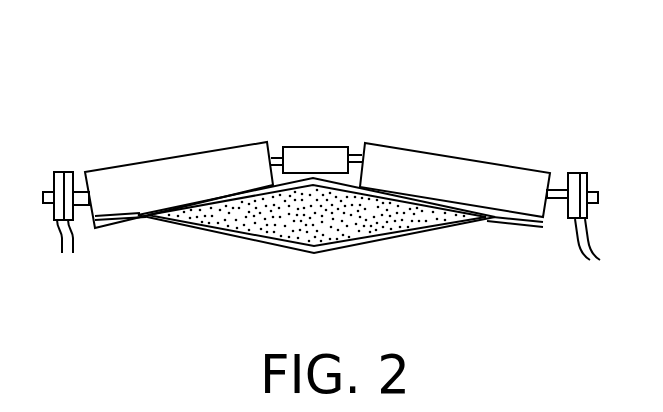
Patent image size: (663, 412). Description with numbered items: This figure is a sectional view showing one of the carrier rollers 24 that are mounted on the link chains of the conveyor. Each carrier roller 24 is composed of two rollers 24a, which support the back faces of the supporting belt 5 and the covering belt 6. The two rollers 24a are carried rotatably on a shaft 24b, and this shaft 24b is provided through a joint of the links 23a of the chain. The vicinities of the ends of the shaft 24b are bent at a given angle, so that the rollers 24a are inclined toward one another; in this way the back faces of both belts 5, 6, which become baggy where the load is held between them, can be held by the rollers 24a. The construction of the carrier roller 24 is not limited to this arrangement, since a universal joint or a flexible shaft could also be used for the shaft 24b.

The carrier roller 24 is at (321, 166).
The roller 24a is at (188, 170).
The shaft 24b is at (557, 220).
The link 23a is at (342, 231).
The covering belt 6 is at (241, 238).
The supporting belt 5 is at (403, 200).